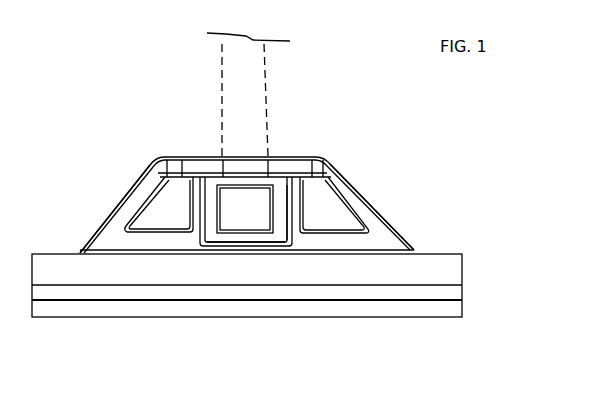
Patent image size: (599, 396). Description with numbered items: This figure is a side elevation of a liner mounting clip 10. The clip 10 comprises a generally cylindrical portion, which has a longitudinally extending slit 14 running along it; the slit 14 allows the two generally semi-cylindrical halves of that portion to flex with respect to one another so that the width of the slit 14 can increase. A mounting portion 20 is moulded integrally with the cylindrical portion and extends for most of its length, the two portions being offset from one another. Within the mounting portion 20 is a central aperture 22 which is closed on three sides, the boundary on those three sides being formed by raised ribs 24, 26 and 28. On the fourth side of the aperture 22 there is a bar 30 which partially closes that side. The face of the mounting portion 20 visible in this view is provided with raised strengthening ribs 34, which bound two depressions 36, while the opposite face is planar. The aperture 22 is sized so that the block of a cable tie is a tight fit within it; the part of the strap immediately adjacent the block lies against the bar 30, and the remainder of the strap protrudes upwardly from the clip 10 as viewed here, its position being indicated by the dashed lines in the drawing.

The clip 10 is at (485, 135).
The slit 14 is at (463, 297).
The mounting portion 20 is at (195, 153).
The aperture 22 is at (248, 200).
The raised rib 24 is at (210, 210).
The raised rib 26 is at (243, 238).
The raised rib 28 is at (290, 209).
The bar 30 is at (248, 157).
The strengthening ribs 34 is at (102, 218).
The depressions 36 is at (338, 219).